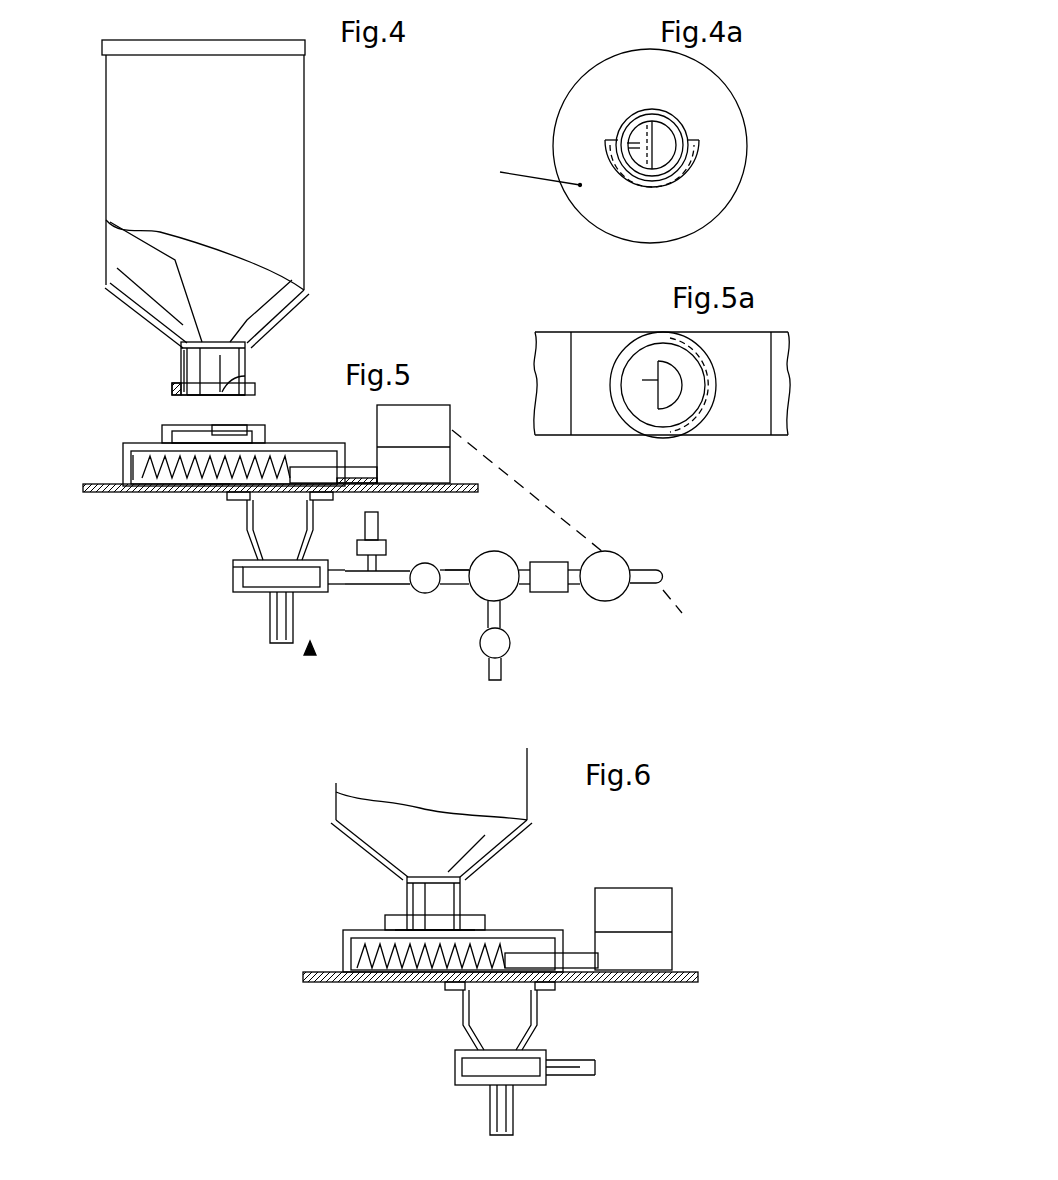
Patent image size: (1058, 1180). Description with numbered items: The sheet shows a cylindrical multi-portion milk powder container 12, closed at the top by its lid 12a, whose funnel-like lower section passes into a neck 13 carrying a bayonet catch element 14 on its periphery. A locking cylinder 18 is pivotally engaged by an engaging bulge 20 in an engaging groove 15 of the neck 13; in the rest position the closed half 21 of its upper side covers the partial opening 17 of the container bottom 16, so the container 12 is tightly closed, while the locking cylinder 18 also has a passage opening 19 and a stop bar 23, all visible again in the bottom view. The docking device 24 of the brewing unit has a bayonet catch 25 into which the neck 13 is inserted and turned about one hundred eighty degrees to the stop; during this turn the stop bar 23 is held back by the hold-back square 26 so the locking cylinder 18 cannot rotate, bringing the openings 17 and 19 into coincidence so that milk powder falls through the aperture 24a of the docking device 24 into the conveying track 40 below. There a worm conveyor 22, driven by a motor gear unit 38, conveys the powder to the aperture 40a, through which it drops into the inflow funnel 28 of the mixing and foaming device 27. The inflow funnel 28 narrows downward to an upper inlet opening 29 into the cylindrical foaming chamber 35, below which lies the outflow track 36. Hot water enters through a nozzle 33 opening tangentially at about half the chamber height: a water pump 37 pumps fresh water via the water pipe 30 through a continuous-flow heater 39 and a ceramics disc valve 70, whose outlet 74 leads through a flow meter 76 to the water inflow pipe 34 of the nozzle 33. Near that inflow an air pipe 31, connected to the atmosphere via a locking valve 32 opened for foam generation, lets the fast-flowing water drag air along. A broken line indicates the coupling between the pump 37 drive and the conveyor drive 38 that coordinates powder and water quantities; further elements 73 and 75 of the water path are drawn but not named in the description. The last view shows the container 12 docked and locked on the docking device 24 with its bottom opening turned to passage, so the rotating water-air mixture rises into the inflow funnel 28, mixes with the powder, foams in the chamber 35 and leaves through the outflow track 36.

In FIG. 4, the multi-portion milk powder container 12 is at (275, 188).
In FIG. 4, the multi-portion milk powder container lid 12a is at (57, 133).
In FIG. 4, the neck 13 is at (187, 373).
In FIG. 4A, the neck 13 is at (617, 137).
In FIG. 4, the bayonet catch element 14 is at (258, 385).
In FIG. 4A, the bayonet catch element 14 is at (692, 167).
In FIG. 4, the engaging groove 15 is at (183, 387).
In FIG. 4, the multi-portion container bottom 16 is at (253, 340).
In FIG. 4, the passage opening of container bottom 17 is at (190, 343).
In FIG. 6, the passage opening of container bottom 17 is at (468, 852).
In FIG. 4, the locking cylinder 18 is at (187, 378).
In FIG. 4, the passage opening of locking cylinder 19 is at (255, 375).
In FIG. 4A, the passage opening of locking cylinder 19 is at (665, 146).
In FIG. 6, the passage opening of locking cylinder 19 is at (460, 903).
In FIG. 4, the engaging bulge 20 is at (177, 393).
In FIG. 4, the locked section of locking cylinder upper side 21 is at (185, 355).
In FIG. 4A, the locked section of locking cylinder upper side 21 is at (632, 130).
In FIG. 5, the worm conveyor 22 is at (190, 470).
In FIG. 4, the stop bar 23 is at (197, 393).
In FIG. 4A, the stop bar 23 is at (620, 140).
In FIG. 5A, the docking device 24 is at (600, 408).
In FIG. 5, the docking device 24 is at (197, 437).
In FIG. 5A, the aperture of docking device 24a is at (678, 390).
In FIG. 5, the aperture of docking device 24a is at (210, 483).
In FIG. 6, the aperture of docking device 24a is at (413, 927).
In FIG. 5A, the bayonet catch 25 is at (713, 393).
In FIG. 5, the bayonet catch 25 is at (247, 433).
In FIG. 5A, the hold-back square 26 is at (656, 386).
In FIG. 5, the hold-back square 26 is at (217, 447).
In FIG. 5, the mixing and foaming device 27 is at (313, 655).
In FIG. 5, the inflow funnel 28 is at (273, 523).
In FIG. 5, the upper inlet opening 29 is at (237, 563).
In FIG. 5, the water pipe 30 is at (662, 585).
In FIG. 5, the air pipe 31 is at (372, 528).
In FIG. 5, the locking valve 32 is at (377, 550).
In FIG. 5, the nozzle 33 is at (328, 590).
In FIG. 5, the water inflow pipe 34 is at (355, 575).
In FIG. 5, the foaming chamber 35 is at (288, 580).
In FIG. 5, the outflow track 36 is at (283, 632).
In FIG. 5, the water pump 37 is at (608, 587).
In FIG. 5, the motor gear unit 38 is at (423, 472).
In FIG. 5, the continuous flow heater 39 is at (557, 592).
In FIG. 5, the conveying track 40 is at (297, 462).
In FIG. 5, the aperture 40a is at (275, 495).
In FIG. 5, the ceramics disc valve 70 is at (498, 570).
In FIG. 5, the branch line 73 is at (498, 613).
In FIG. 5, the ceramics valve outlet 74 is at (455, 578).
In FIG. 5, the auxiliary valve 75 is at (490, 643).
In FIG. 5, the flow meter 76 is at (425, 583).